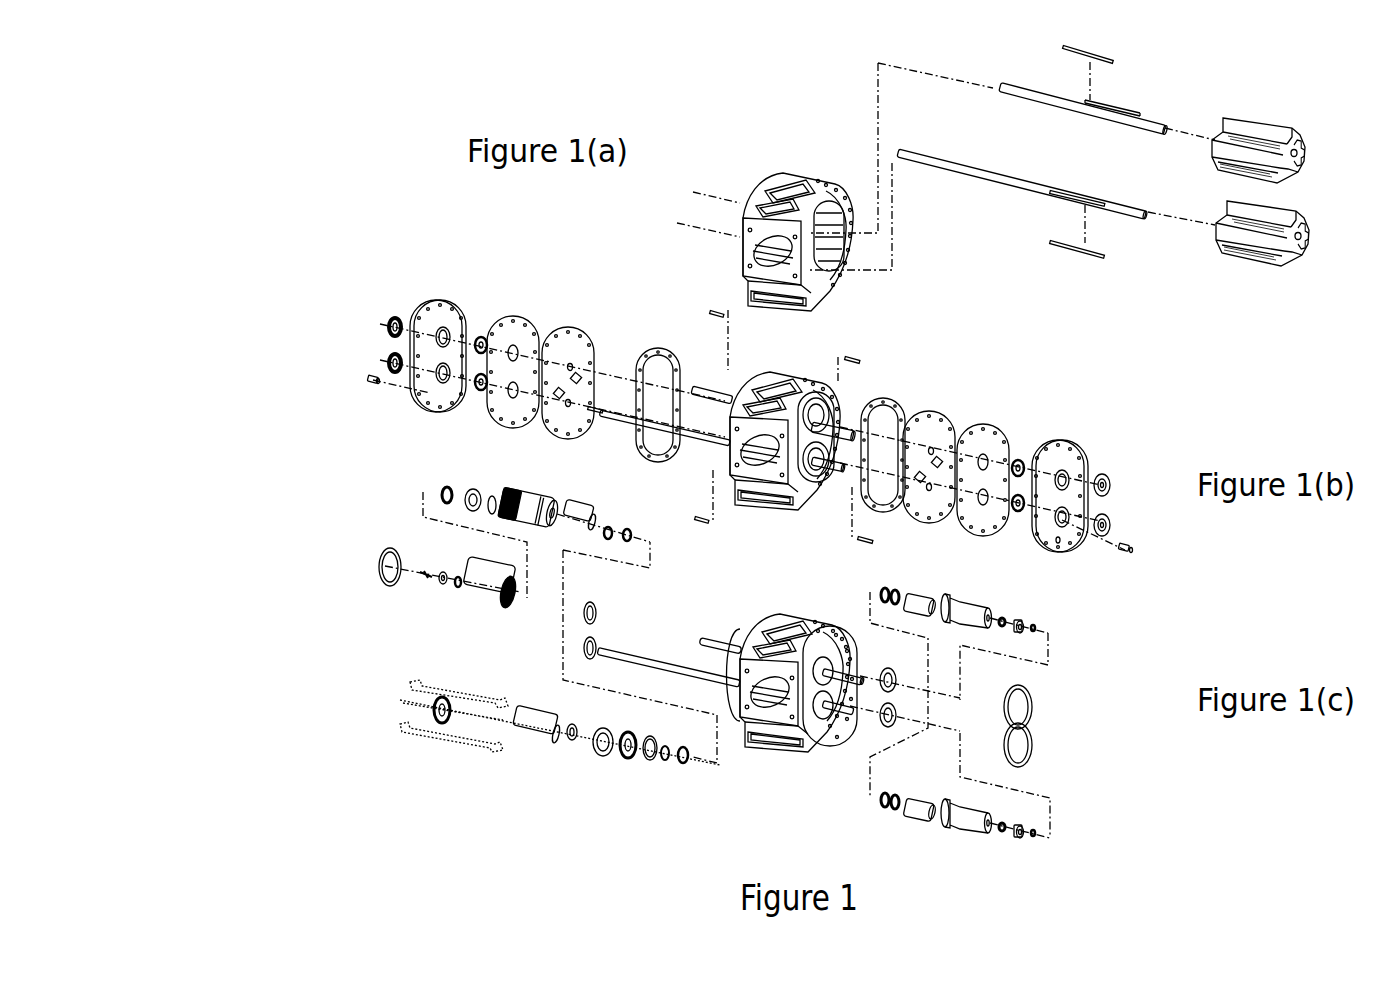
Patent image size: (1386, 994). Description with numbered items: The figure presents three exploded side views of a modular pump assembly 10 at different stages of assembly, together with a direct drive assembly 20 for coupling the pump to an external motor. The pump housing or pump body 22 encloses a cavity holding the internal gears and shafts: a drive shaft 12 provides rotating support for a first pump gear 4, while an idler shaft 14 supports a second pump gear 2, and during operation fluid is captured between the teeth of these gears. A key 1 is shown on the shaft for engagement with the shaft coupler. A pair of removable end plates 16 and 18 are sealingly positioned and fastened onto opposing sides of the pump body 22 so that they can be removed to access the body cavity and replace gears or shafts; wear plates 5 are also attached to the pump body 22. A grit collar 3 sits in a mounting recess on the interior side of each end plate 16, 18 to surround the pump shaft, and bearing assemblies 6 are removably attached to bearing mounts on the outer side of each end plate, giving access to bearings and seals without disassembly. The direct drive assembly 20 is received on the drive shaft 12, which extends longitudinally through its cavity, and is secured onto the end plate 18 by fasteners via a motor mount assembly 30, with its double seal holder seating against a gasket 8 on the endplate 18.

In FIG. 1A, the key 1 is at (893, 160).
In FIG. 1A, the second pump gear 2 is at (1265, 137).
In FIG. 1B, the grit collar 3 is at (1010, 460).
In FIG. 1A, the first pump gear 4 is at (1235, 268).
In FIG. 1B, the wear plate 5 is at (573, 328).
In FIG. 1C, the bearing assembly 6 is at (420, 531).
In FIG. 1C, the gasket 8 is at (577, 651).
In FIG. 1, the pump assembly 10 is at (727, 252).
In FIG. 1A, the drive shaft 12 is at (1000, 170).
In FIG. 1B, the drive shaft 12 is at (823, 468).
In FIG. 1C, the drive shaft 12 is at (665, 667).
In FIG. 1A, the idler shaft 14 is at (1052, 93).
In FIG. 1B, the idler shaft 14 is at (845, 422).
In FIG. 1C, the idler shaft 14 is at (712, 635).
In FIG. 1B, the end plate 16 is at (1077, 445).
In FIG. 1C, the end plate 16 is at (843, 632).
In FIG. 1B, the end plate 18 is at (445, 297).
In FIG. 1C, the end plate 18 is at (740, 618).
In FIG. 1C, the direct drive assembly 20 is at (503, 770).
In FIG. 1A, the pump body 22 is at (780, 168).
In FIG. 1B, the pump body 22 is at (800, 372).
In FIG. 1C, the motor mount assembly 30 is at (433, 737).